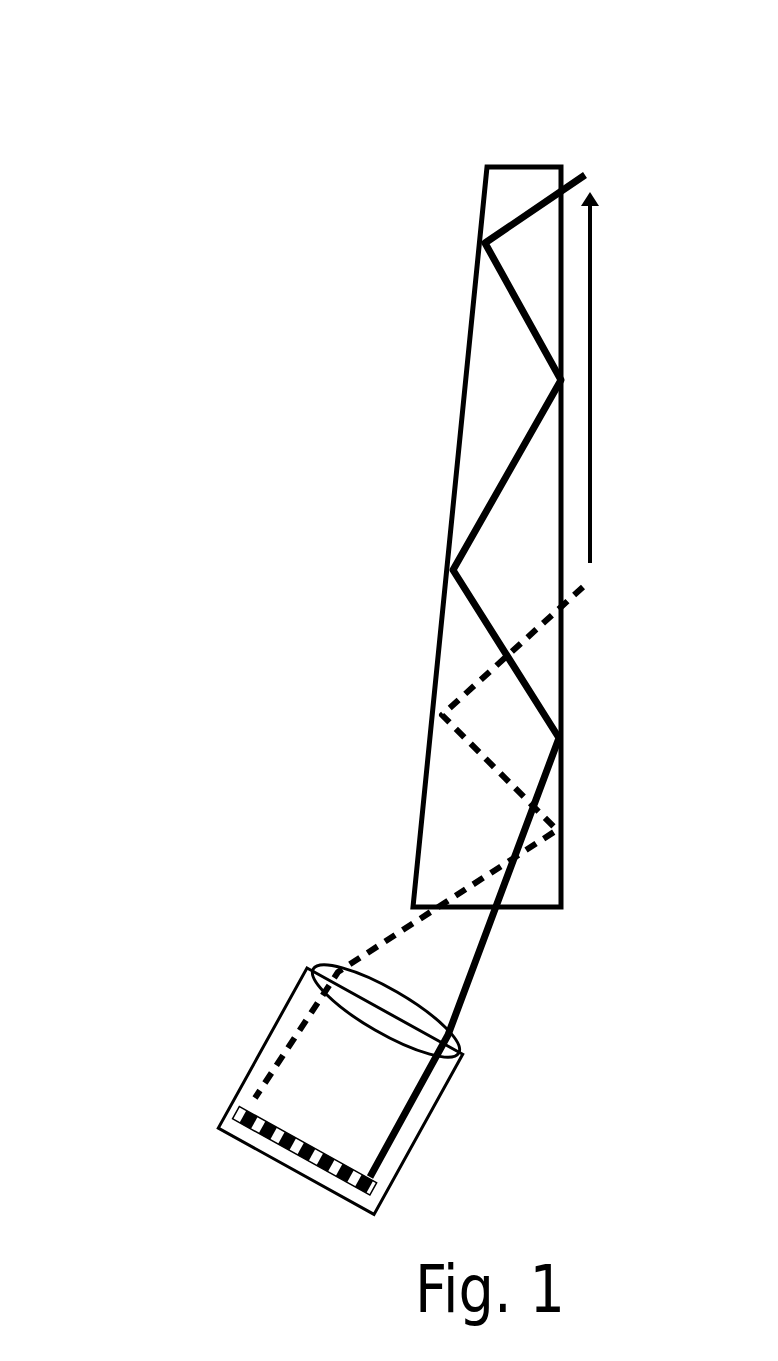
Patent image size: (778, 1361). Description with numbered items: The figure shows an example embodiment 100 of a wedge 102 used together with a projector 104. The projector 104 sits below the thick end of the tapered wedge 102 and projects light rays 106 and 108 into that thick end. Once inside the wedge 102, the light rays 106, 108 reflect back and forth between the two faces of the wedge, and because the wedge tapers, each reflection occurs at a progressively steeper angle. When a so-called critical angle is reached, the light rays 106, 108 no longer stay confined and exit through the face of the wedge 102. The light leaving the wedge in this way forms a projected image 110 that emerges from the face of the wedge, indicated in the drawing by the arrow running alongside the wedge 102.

The example embodiment 100 is at (163, 52).
The wedge 102 is at (500, 165).
The projector 104 is at (308, 967).
The light ray 106 is at (587, 584).
The light ray 108 is at (586, 172).
The projected image 110 is at (592, 378).